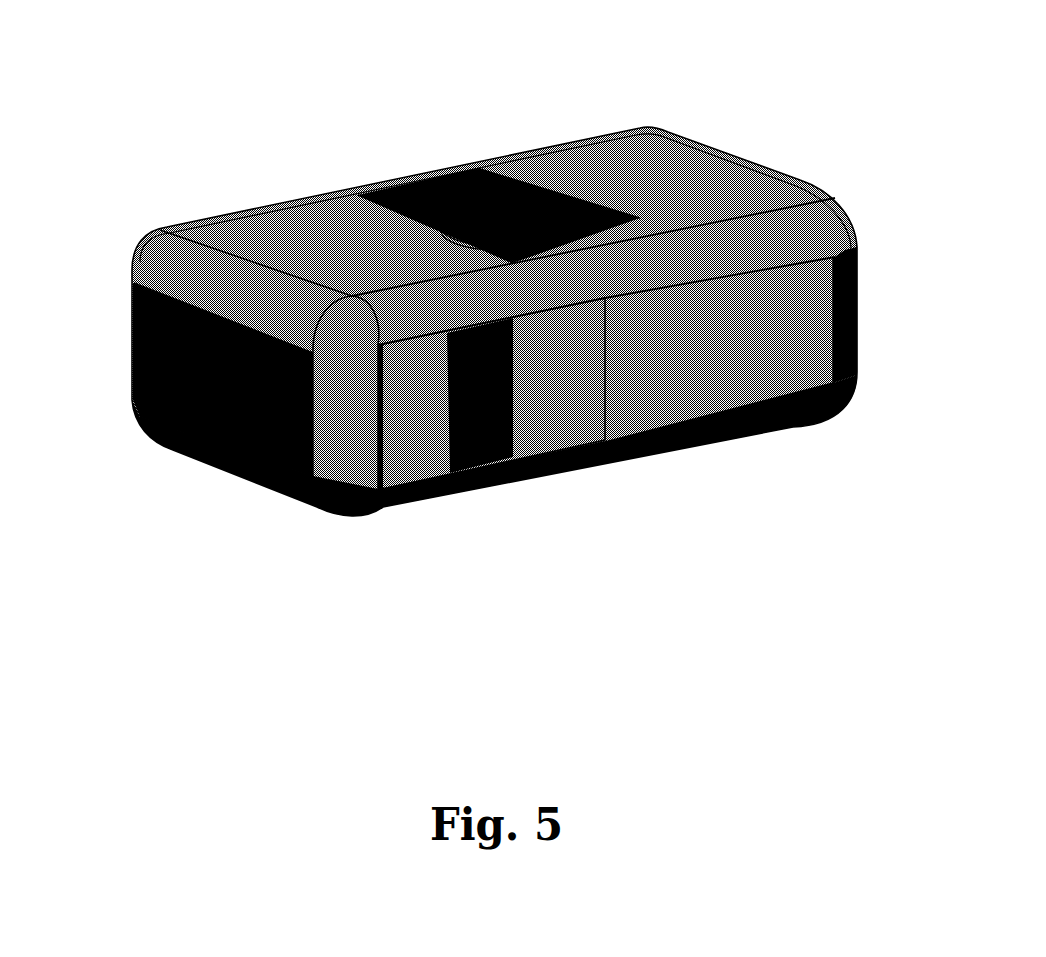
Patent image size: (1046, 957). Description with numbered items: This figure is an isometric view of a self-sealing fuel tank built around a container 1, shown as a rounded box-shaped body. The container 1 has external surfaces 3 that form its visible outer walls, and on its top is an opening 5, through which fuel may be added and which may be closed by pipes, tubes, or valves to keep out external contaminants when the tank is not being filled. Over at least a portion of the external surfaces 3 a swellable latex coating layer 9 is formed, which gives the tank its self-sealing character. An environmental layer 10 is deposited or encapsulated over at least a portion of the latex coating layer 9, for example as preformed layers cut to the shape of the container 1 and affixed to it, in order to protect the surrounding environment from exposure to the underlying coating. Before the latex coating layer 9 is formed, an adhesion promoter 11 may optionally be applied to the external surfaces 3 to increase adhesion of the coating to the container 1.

The container 1 is at (170, 451).
The external surfaces 3 is at (405, 436).
The opening 5 is at (407, 176).
The latex coating layer 9 is at (568, 400).
The environmental layer 10 is at (775, 360).
The adhesion promoter 11 is at (530, 478).